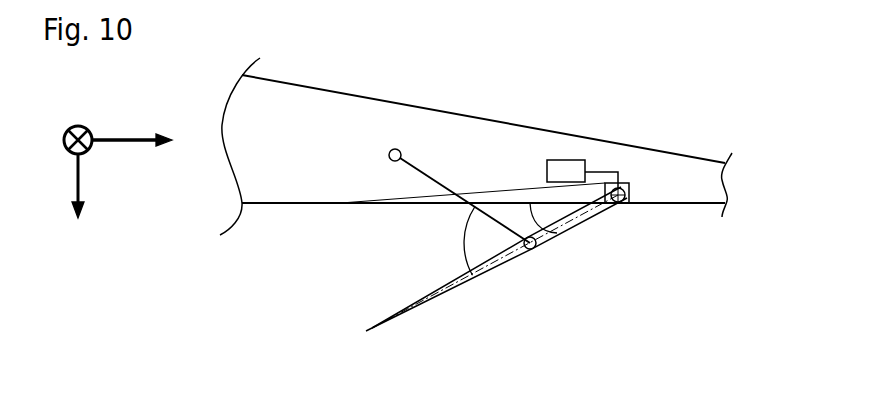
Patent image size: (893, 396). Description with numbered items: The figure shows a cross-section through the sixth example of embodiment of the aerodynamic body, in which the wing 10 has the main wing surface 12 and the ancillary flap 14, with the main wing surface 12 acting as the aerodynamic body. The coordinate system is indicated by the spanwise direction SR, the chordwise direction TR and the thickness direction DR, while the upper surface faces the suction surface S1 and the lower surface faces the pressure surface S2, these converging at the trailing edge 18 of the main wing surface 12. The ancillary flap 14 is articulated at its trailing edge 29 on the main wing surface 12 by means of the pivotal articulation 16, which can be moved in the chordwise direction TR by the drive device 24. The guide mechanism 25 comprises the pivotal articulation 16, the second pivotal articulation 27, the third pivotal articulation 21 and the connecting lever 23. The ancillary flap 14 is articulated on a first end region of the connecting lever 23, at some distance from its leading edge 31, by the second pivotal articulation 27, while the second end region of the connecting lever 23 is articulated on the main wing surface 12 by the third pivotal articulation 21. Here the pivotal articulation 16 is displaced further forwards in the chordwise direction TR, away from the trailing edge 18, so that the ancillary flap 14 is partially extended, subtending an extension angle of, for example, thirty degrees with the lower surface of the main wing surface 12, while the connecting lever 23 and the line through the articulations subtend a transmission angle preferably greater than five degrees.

The wing 10 is at (407, 66).
The main wing surface 12 is at (300, 205).
The ancillary flap 14 is at (548, 234).
The pivotal articulation 16 is at (616, 205).
The main wing surface trailing edge 18 is at (723, 178).
The third pivotal articulation 21 is at (390, 150).
The connecting lever 23 is at (430, 174).
The drive device 24 is at (580, 160).
The guide mechanism 25 is at (554, 137).
The second pivotal articulation 27 is at (530, 253).
The ancillary flap trailing edge 29 is at (636, 205).
The ancillary flap leading edge 31 is at (372, 328).
The suction surface S1 is at (338, 38).
The pressure surface S2 is at (353, 246).
The spanwise direction SR is at (88, 126).
The chordwise direction TR is at (112, 143).
The thickness direction DR is at (78, 175).